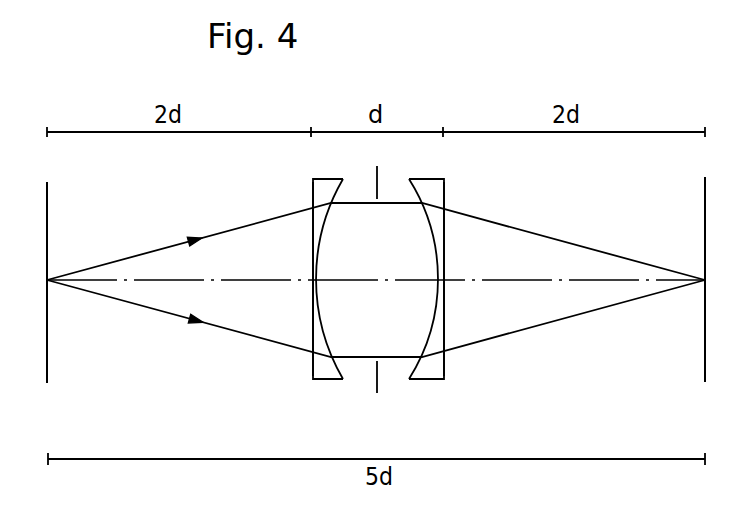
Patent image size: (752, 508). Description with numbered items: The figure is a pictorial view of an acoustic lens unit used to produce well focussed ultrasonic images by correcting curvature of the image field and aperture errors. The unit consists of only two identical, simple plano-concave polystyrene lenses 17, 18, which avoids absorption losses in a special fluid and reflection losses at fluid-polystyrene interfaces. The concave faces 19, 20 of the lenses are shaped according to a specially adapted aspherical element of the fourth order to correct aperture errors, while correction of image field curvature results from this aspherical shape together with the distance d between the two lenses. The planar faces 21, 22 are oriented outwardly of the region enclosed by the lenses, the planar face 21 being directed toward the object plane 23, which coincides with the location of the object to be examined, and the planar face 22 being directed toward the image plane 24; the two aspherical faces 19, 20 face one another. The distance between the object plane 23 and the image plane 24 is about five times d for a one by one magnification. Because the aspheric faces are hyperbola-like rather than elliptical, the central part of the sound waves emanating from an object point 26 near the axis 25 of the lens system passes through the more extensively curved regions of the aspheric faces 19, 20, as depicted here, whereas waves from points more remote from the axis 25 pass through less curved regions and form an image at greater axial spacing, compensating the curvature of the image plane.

The plano-concave polystyrene lens 17 is at (315, 308).
The plano-concave polystyrene lens 18 is at (448, 308).
The concave face 19 is at (327, 338).
The concave face 20 is at (423, 340).
The planar face 21 is at (310, 322).
The planar face 22 is at (444, 320).
The object plane 23 is at (48, 367).
The image plane 24 is at (705, 355).
The axis 25 is at (147, 280).
The object point 26 is at (51, 275).